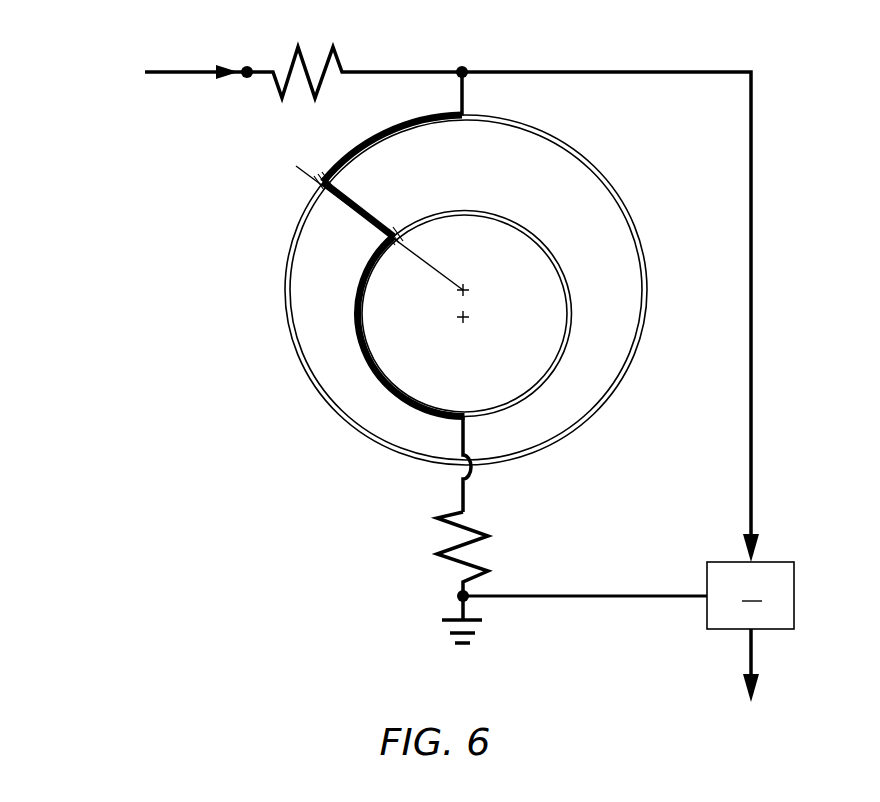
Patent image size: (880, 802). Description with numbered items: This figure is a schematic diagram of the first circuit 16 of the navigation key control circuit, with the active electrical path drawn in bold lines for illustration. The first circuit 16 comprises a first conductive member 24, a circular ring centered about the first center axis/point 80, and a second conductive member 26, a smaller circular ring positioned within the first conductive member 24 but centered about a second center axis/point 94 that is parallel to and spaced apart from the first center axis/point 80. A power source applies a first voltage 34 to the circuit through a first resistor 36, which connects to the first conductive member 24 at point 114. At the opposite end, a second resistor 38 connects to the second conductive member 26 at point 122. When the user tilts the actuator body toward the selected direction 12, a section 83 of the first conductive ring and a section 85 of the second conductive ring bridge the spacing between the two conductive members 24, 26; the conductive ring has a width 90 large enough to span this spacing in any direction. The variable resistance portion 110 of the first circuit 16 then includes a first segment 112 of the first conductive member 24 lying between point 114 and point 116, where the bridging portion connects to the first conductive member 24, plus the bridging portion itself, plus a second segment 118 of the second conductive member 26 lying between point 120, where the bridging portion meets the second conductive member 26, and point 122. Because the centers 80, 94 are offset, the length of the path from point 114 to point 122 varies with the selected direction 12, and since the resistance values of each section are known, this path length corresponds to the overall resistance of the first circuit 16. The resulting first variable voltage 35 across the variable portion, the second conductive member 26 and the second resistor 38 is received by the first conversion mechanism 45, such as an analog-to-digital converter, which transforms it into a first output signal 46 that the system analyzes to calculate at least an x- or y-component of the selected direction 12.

The selected direction 12 is at (290, 165).
The first circuit 16 is at (122, 132).
The first conductive member 24 is at (645, 213).
The second conductive member 26 is at (570, 322).
The first voltage 34 is at (192, 72).
The first variable voltage 35 is at (750, 288).
The first resistor 36 is at (280, 44).
The second resistor 38 is at (420, 563).
The first conversion mechanism 45 is at (628, 581).
The first output signal 46 is at (750, 658).
The first center axis/point 80 is at (463, 290).
The section of first conductive ring 83 is at (316, 180).
The section of second conductive ring 85 is at (360, 220).
The width of first conductive ring 90 is at (469, 39).
The second center axis/point 94 is at (463, 317).
The variable resistance portion 110 is at (578, 477).
The first segment 112 is at (380, 132).
The point 114 is at (470, 108).
The point 116 is at (316, 184).
The second segment 118 is at (367, 365).
The point 120 is at (396, 244).
The point 122 is at (463, 413).